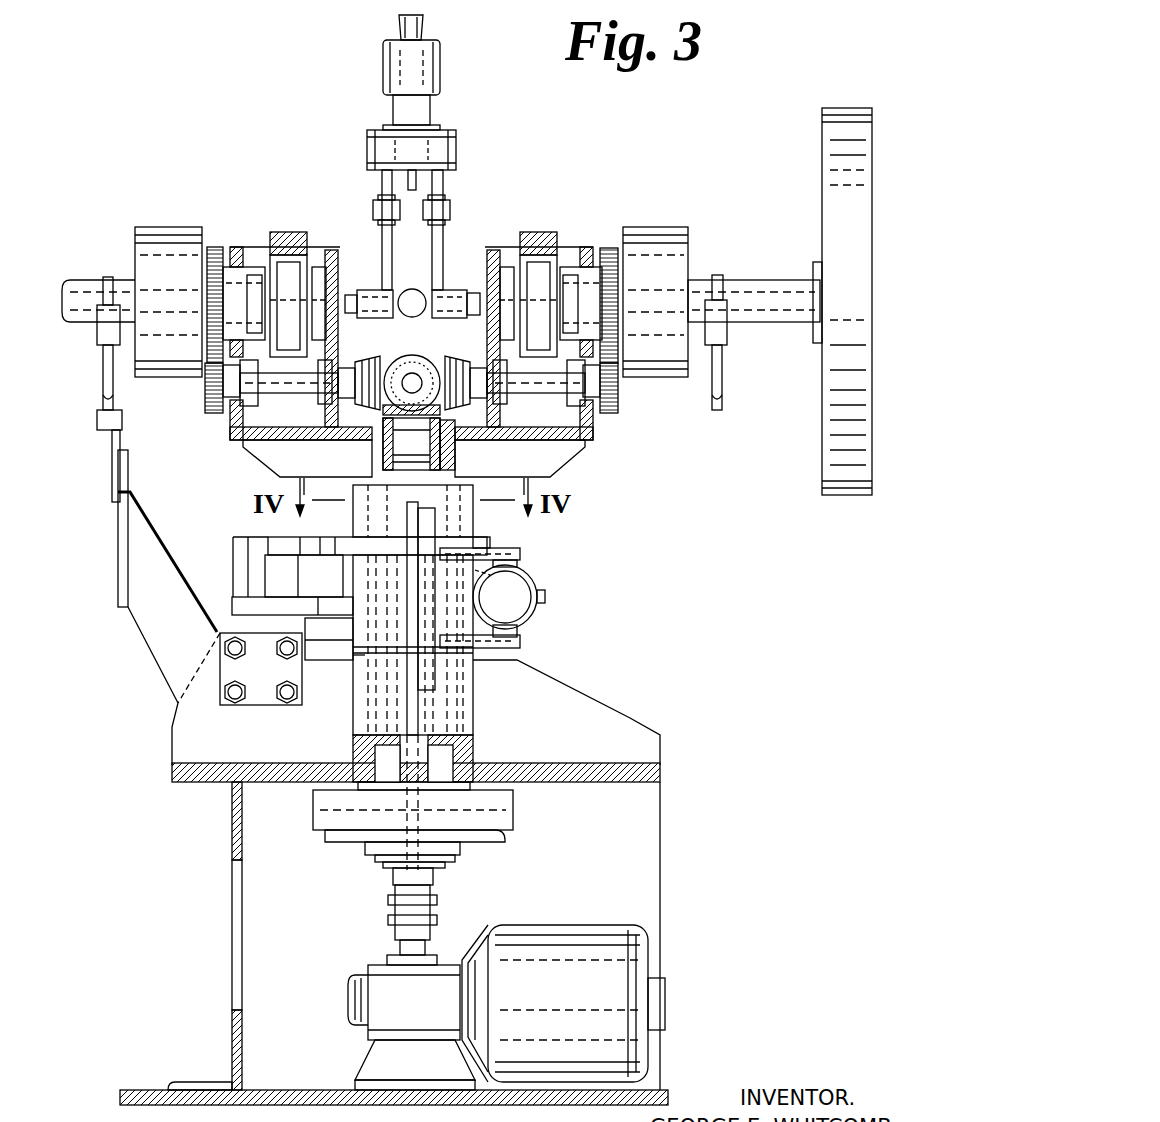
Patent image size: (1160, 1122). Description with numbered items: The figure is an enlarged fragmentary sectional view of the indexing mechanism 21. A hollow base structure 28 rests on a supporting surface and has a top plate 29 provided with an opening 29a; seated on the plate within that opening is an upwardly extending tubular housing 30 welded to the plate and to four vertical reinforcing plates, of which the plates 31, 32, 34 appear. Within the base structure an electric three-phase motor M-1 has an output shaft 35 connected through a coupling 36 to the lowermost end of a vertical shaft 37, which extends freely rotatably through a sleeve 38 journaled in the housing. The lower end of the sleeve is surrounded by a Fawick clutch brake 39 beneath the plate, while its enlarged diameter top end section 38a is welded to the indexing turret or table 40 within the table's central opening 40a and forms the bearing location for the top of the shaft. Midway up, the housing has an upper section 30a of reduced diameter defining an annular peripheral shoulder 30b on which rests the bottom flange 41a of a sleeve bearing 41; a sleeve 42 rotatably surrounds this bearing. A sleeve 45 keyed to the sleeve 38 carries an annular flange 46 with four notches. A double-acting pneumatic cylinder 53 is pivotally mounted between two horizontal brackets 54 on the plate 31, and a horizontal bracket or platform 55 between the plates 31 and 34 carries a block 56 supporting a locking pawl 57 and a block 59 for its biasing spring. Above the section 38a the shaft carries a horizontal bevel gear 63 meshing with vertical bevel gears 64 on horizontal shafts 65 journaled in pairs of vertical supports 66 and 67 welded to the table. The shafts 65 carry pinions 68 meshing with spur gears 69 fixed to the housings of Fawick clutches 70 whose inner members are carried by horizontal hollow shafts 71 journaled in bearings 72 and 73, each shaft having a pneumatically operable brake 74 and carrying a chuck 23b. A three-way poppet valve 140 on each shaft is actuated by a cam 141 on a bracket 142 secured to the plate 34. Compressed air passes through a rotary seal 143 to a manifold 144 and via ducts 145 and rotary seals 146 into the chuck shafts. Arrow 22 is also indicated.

The rotary seal 143 is at (440, 68).
The manifold 144 is at (456, 152).
The ducts 145 is at (382, 183).
The rotary seals 146 is at (416, 290).
The gear housing 22 is at (382, 363).
The vertical supports 66 is at (232, 420).
The central opening 40a is at (372, 445).
The indexing turret or table 40 is at (578, 447).
The bearings 72 is at (255, 270).
The pneumatically operable brake 74 is at (290, 235).
The bearings 73 is at (330, 262).
The spur gears 69 is at (215, 247).
The pinions 68 is at (205, 390).
The Fawick clutches 70 is at (150, 230).
The horizontal hollow shafts 71 is at (76, 284).
The three-way poppet valve 140 is at (101, 386).
The cam 141 is at (108, 427).
The bracket 142 is at (136, 648).
The vertical supports 67 is at (305, 384).
The horizontal shafts 65 is at (410, 372).
The vertical bevel gears 64 is at (368, 362).
The horizontal bevel gear 63 is at (411, 444).
The enlarged diameter top end section 38a is at (455, 452).
The flywheel 23b is at (832, 488).
The indexing mechanism 21 is at (612, 647).
The sleeve 45 is at (470, 512).
The annular flange 46 is at (490, 546).
The horizontal brackets 54 is at (522, 554).
The locking pawl 57 is at (293, 541).
The block 59 is at (233, 548).
The horizontal bracket or platform 55 is at (232, 602).
The block 56 is at (290, 637).
The sleeve bearing 41 is at (362, 630).
The bottom flange 41a is at (353, 646).
The annular peripheral shoulder 30b is at (358, 658).
The tubular housing 30 is at (475, 692).
The upper section of reduced diameter 30a is at (498, 585).
The double-acting pneumatic cylinder 53 is at (528, 600).
The sleeve 42 is at (515, 622).
The vertical reinforcing plate 31 is at (407, 705).
The vertical reinforcing plate 32 is at (625, 715).
The vertical reinforcing plate 34 is at (175, 740).
The top plate 29 is at (650, 777).
The opening 29a is at (358, 786).
The sleeve 38 is at (358, 752).
The vertical shaft 37 is at (428, 752).
The Fawick clutch brake 39 is at (505, 810).
The hollow base structure 28 is at (660, 878).
The coupling 36 is at (395, 910).
The output shaft 35 is at (400, 958).
The electric three-phase motor M-1 is at (552, 935).